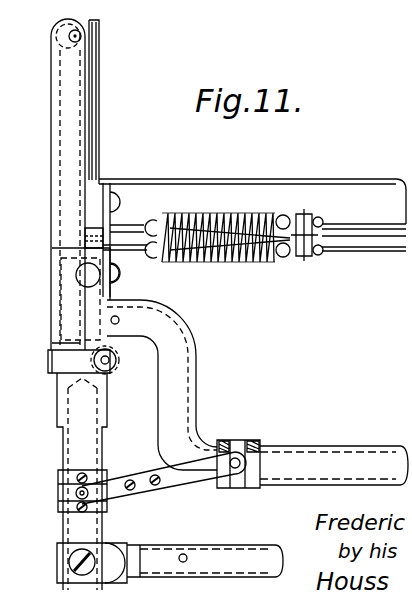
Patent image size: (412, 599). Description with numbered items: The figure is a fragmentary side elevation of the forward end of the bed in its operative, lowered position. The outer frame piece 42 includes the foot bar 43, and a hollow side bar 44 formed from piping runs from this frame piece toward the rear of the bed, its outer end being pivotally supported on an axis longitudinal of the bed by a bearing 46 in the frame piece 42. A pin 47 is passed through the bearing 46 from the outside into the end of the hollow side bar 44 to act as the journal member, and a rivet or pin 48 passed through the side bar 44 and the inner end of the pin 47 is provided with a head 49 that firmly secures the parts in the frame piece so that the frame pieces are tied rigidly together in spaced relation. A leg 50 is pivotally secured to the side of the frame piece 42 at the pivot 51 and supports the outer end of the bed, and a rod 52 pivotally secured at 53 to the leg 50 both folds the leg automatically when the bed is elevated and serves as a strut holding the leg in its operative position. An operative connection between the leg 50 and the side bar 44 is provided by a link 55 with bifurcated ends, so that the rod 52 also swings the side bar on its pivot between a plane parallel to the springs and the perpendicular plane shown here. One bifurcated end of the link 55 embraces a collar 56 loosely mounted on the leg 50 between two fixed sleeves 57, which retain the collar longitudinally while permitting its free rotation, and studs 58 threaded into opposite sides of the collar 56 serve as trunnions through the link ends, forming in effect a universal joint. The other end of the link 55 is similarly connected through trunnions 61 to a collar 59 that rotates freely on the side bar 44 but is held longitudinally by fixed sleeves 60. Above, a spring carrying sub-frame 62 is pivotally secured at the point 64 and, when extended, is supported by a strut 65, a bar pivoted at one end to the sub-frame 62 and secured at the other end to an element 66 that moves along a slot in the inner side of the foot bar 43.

The outer frame piece 42 is at (118, 280).
The foot bar 43 is at (62, 98).
The side bar 44 is at (290, 450).
The bearing 46 is at (75, 337).
The pin 47 is at (131, 334).
The rivet or pin 48 is at (119, 318).
The head 49 is at (63, 303).
The leg 50 is at (75, 437).
The pivot 51 is at (110, 362).
The rod 52 is at (213, 570).
The pivot 53 is at (68, 560).
The link 55 is at (153, 478).
The collar 56 is at (76, 493).
The fixed sleeve 57 is at (76, 478).
The stud 58 is at (88, 497).
The collar 59 is at (241, 488).
The fixed sleeve 60 is at (224, 486).
The trunnion 61 is at (248, 464).
The spring carrying sub-frame 62 is at (203, 178).
The pivot point 64 is at (85, 240).
The strut 65 is at (97, 88).
The slot element 66 is at (74, 45).